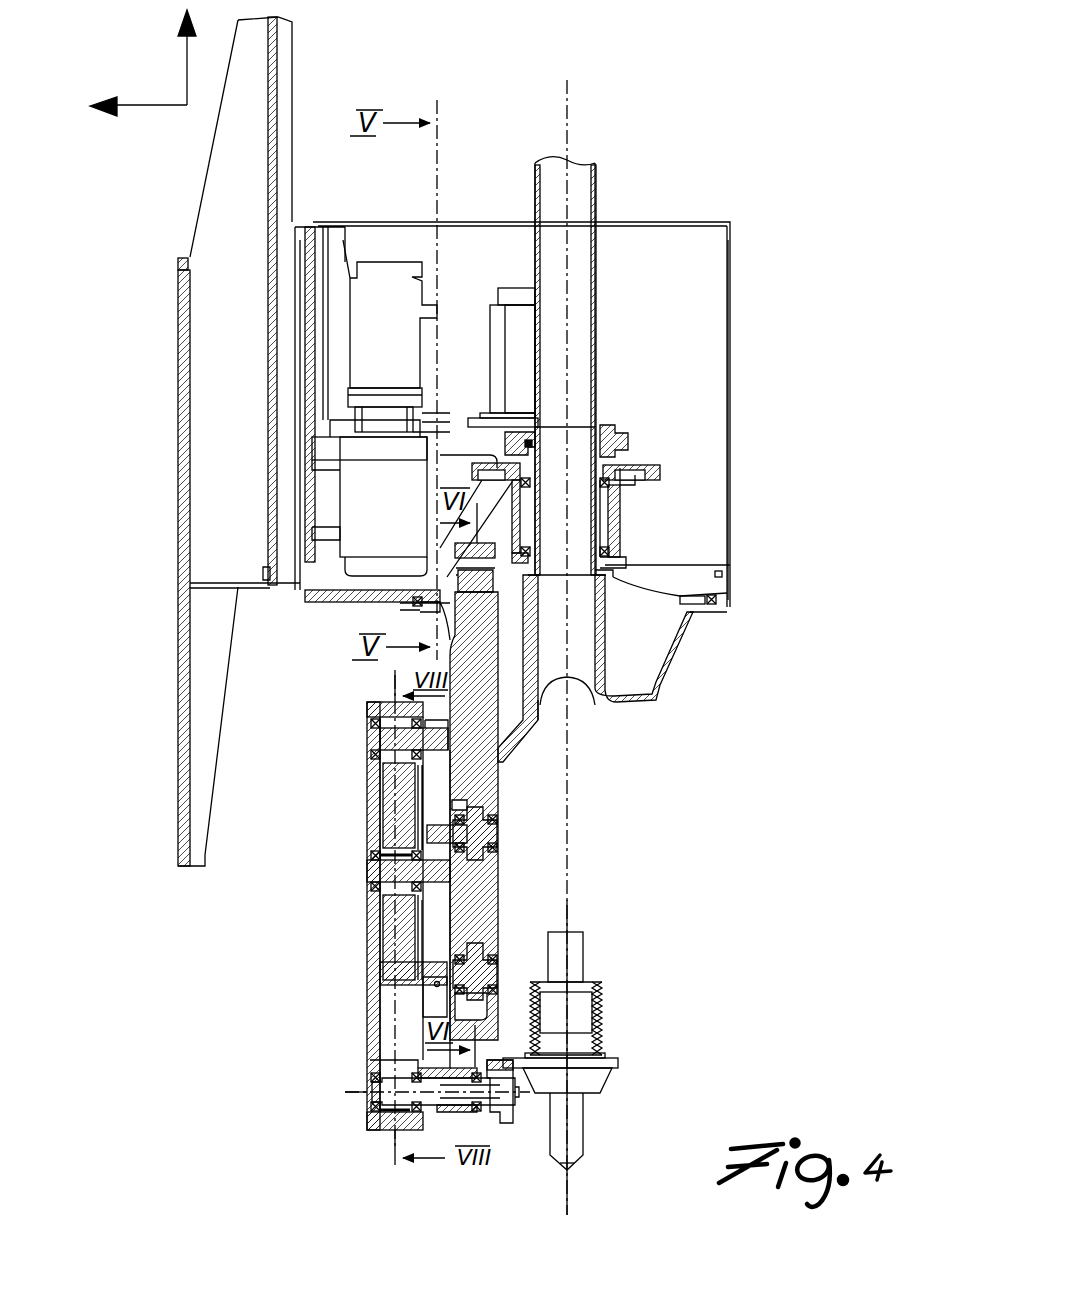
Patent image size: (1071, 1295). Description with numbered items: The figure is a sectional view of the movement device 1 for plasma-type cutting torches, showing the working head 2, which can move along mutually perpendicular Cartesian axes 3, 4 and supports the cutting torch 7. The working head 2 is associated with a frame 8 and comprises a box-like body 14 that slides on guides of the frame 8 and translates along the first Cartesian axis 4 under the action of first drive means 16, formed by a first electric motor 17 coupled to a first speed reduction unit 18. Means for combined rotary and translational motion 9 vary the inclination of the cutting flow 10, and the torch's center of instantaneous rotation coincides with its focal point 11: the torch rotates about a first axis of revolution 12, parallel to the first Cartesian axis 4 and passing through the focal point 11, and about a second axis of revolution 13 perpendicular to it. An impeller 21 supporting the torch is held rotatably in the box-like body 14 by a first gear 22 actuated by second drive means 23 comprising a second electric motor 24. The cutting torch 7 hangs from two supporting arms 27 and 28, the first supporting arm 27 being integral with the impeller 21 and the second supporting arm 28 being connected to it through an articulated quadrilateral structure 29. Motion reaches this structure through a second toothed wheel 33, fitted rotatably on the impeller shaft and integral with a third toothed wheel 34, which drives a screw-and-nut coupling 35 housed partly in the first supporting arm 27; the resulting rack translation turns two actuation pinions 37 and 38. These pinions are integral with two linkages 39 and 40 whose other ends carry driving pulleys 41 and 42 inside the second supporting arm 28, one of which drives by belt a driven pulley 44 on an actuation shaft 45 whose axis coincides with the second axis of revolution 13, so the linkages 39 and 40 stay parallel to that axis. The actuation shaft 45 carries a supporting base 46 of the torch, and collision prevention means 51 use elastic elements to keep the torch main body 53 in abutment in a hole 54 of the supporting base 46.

The movement device 1 is at (760, 108).
The working head 2 is at (563, 431).
The Cartesian axis 3 is at (148, 108).
The first Cartesian axis 4 is at (187, 62).
The cutting torch 7 is at (592, 1143).
The frame 8 is at (168, 742).
The means for combined rotary and translational motion 9 is at (262, 977).
The cutting flow 10 is at (572, 913).
The focal point 11 is at (568, 1168).
The first axis of revolution 12 is at (576, 120).
The second axis of revolution 13 is at (355, 1098).
The box-like body 14 is at (735, 345).
The first drive means 16 is at (283, 295).
The first electric motor 17 is at (372, 340).
The first speed reduction unit 18 is at (355, 490).
The impeller 21 is at (694, 652).
The first gear 22 is at (640, 440).
The second drive means 23 is at (488, 303).
The second electric motor 24 is at (523, 325).
The first supporting arm 27 is at (508, 786).
The second supporting arm 28 is at (358, 798).
The articulated quadrilateral structure 29 is at (462, 805).
The second toothed wheel 33 is at (625, 470).
The third toothed wheel 34 is at (618, 520).
The screw-and-nut coupling 35 is at (500, 580).
The actuation pinion 37 is at (445, 836).
The actuation pinion 38 is at (432, 975).
The linkage 39 is at (432, 812).
The linkage 40 is at (432, 932).
The driving pulley 41 is at (388, 738).
The driving pulley 42 is at (388, 868).
The driven pulley 44 is at (388, 1090).
The actuation shaft 45 is at (495, 1108).
The supporting base 46 is at (616, 1062).
The collision prevention means 51 is at (612, 1004).
The main body 53 is at (578, 962).
The hole 54 is at (600, 1068).